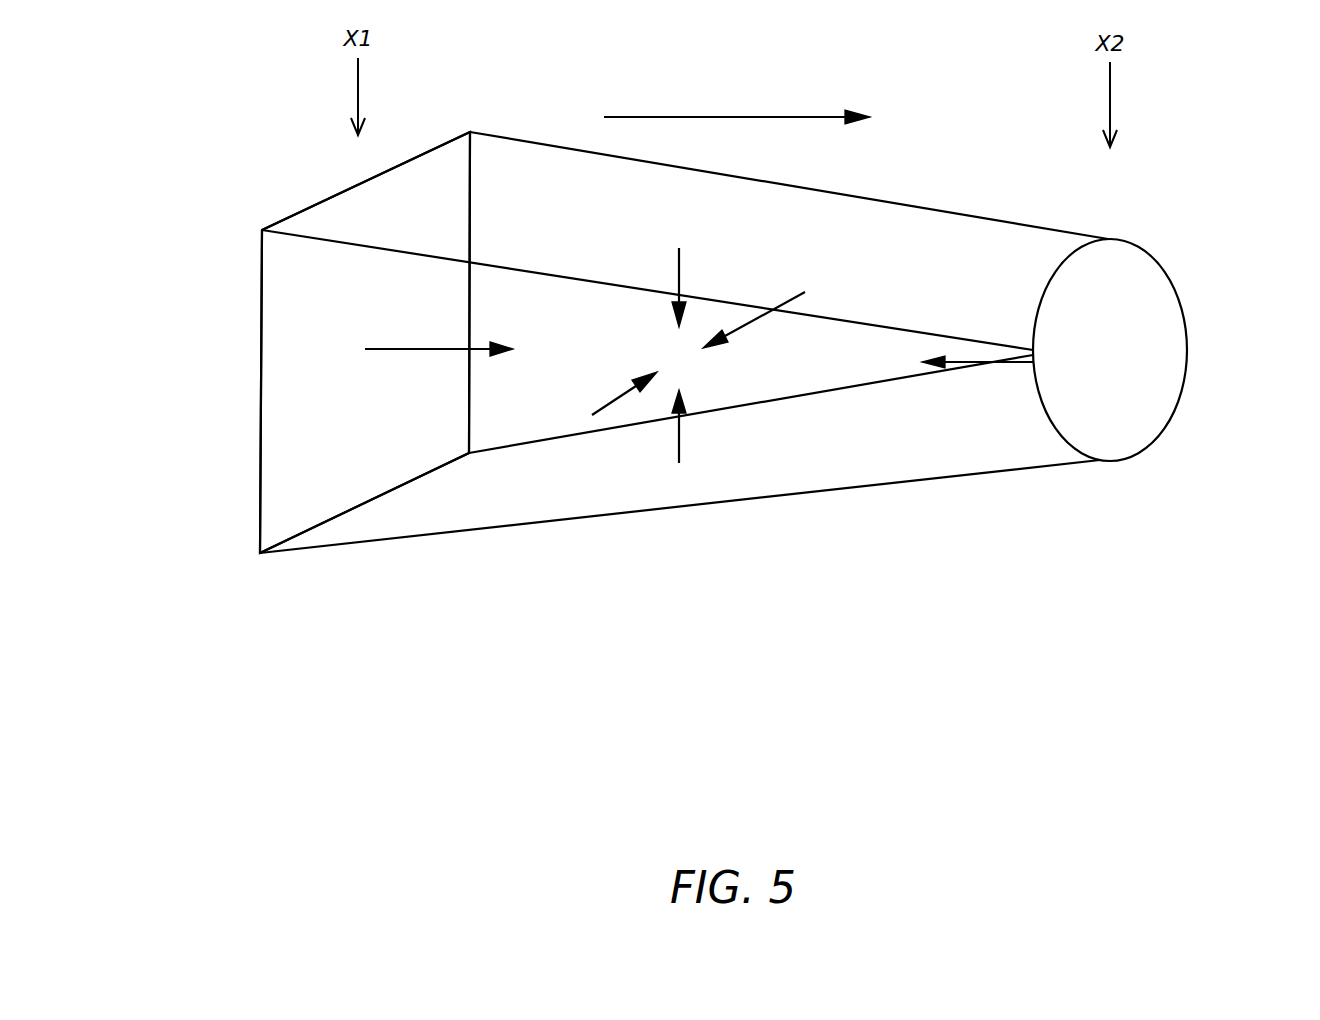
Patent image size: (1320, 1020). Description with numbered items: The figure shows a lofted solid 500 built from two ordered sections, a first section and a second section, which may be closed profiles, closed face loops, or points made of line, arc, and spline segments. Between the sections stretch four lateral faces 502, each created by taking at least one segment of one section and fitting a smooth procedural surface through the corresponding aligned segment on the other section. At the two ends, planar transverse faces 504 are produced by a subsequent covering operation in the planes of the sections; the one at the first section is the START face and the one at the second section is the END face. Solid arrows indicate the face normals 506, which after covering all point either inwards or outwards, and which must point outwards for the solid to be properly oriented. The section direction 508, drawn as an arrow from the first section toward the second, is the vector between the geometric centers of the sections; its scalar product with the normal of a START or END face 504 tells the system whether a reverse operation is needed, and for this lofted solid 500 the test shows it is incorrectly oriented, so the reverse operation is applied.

The lofted solid 500 is at (976, 558).
The lateral faces 502 is at (886, 228).
The transverse faces 504 is at (1227, 250).
The face normals 506 is at (410, 348).
The section direction 508 is at (737, 73).